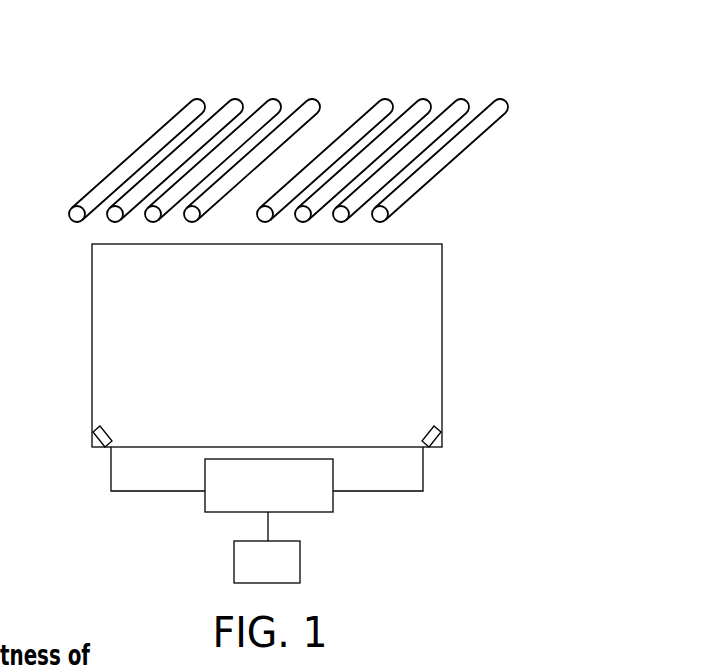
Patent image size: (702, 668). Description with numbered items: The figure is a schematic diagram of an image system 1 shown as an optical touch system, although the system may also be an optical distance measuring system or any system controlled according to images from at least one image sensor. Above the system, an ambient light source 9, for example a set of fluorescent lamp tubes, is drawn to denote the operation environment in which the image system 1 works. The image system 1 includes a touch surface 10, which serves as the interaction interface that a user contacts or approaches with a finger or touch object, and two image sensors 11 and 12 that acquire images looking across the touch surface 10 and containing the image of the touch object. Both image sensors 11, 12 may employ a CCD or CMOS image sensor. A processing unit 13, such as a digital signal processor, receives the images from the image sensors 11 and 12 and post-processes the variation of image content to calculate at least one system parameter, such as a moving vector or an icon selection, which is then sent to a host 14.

The image system 1 is at (567, 72).
The ambient light source 9 is at (303, 90).
The touch surface 10 is at (423, 346).
The image sensor 11 is at (92, 432).
The image sensor 12 is at (442, 428).
The processing unit 13 is at (333, 508).
The host 14 is at (300, 559).